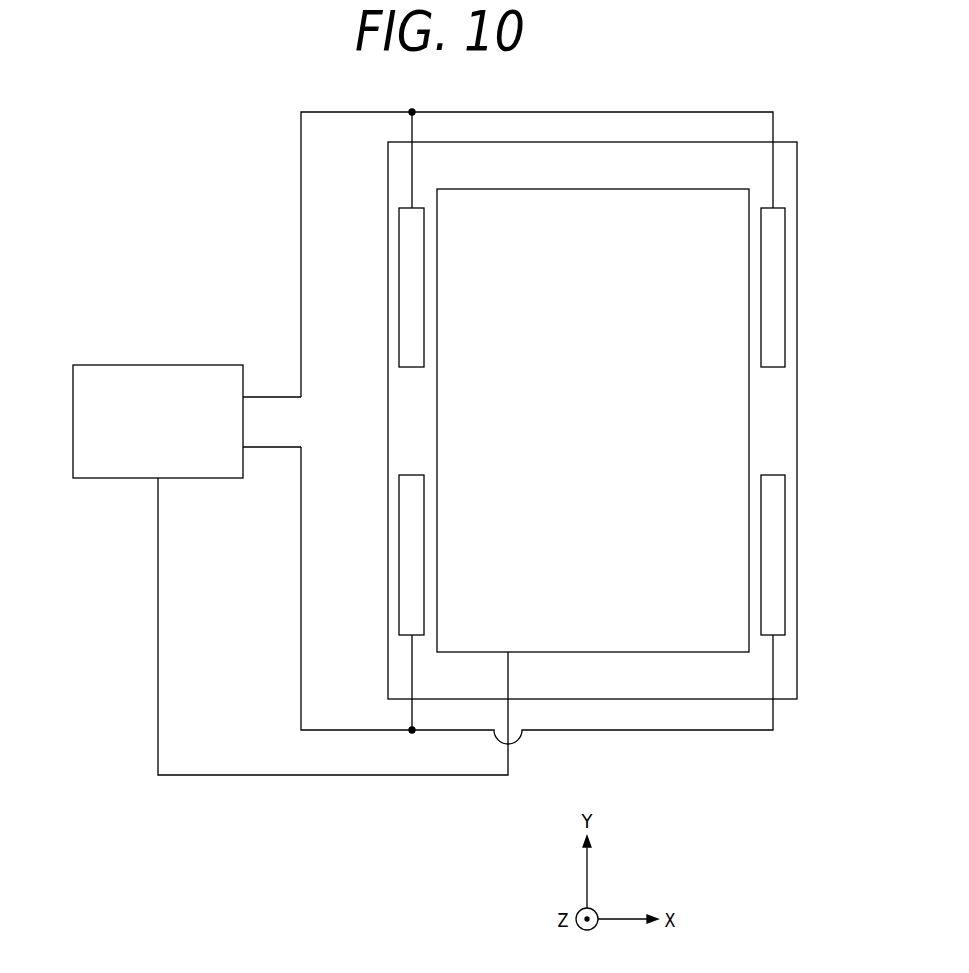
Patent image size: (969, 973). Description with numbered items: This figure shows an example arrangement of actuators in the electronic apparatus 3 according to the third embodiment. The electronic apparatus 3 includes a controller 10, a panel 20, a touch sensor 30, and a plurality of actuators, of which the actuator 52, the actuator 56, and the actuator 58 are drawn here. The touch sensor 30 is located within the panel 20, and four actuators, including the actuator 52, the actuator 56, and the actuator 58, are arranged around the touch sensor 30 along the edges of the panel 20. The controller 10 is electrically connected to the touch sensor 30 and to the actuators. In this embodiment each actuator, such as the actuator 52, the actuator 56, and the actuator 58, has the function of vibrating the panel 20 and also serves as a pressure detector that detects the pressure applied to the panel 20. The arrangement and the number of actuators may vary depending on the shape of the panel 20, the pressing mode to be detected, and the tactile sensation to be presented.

The electronic apparatus 3 is at (739, 762).
The controller 10 is at (73, 424).
The panel 20 is at (388, 170).
The touch sensor 30 is at (535, 189).
The actuator 52 is at (399, 288).
The actuator 56 is at (399, 574).
The actuator 58 is at (785, 553).